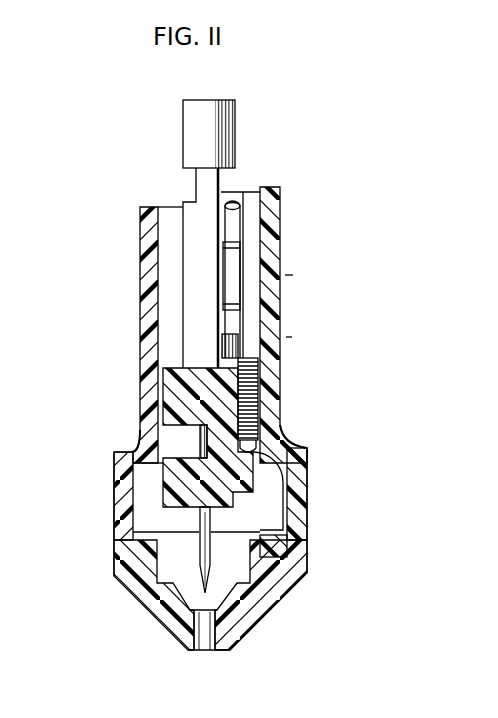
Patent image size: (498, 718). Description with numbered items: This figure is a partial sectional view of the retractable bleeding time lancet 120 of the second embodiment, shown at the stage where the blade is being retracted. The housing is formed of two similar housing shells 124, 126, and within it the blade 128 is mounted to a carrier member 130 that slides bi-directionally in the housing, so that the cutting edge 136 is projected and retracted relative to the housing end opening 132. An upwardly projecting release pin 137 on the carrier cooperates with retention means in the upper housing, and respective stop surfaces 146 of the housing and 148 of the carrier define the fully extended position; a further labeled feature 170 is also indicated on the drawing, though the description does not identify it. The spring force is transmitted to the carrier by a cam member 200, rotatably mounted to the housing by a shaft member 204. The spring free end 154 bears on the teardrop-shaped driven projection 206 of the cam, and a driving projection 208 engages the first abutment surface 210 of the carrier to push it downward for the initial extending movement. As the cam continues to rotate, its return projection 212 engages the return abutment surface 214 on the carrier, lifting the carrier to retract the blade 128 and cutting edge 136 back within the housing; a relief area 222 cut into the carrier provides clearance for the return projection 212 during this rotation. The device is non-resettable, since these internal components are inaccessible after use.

The retractable bleeding time lancet 120 is at (300, 188).
The housing shell 124 is at (138, 400).
The housing shell 126 is at (283, 417).
The blade 128 is at (114, 542).
The carrier member 130 is at (232, 504).
The housing end opening 132 is at (207, 656).
The cutting edge 136 is at (117, 593).
The release pin 137 is at (213, 117).
The stop surface of the housing 146 is at (305, 558).
The stop surface of the carrier 148 is at (303, 487).
The spring free end 154 is at (236, 198).
The stem shoulder 170 is at (190, 187).
The cam member 200 is at (250, 300).
The shaft member 204 is at (290, 337).
The driven projection 206 is at (233, 268).
The driving projection 208 is at (221, 333).
The first abutment surface 210 is at (262, 362).
The return projection 212 is at (303, 446).
The return abutment surface 214 is at (288, 275).
The relief area 222 is at (117, 452).